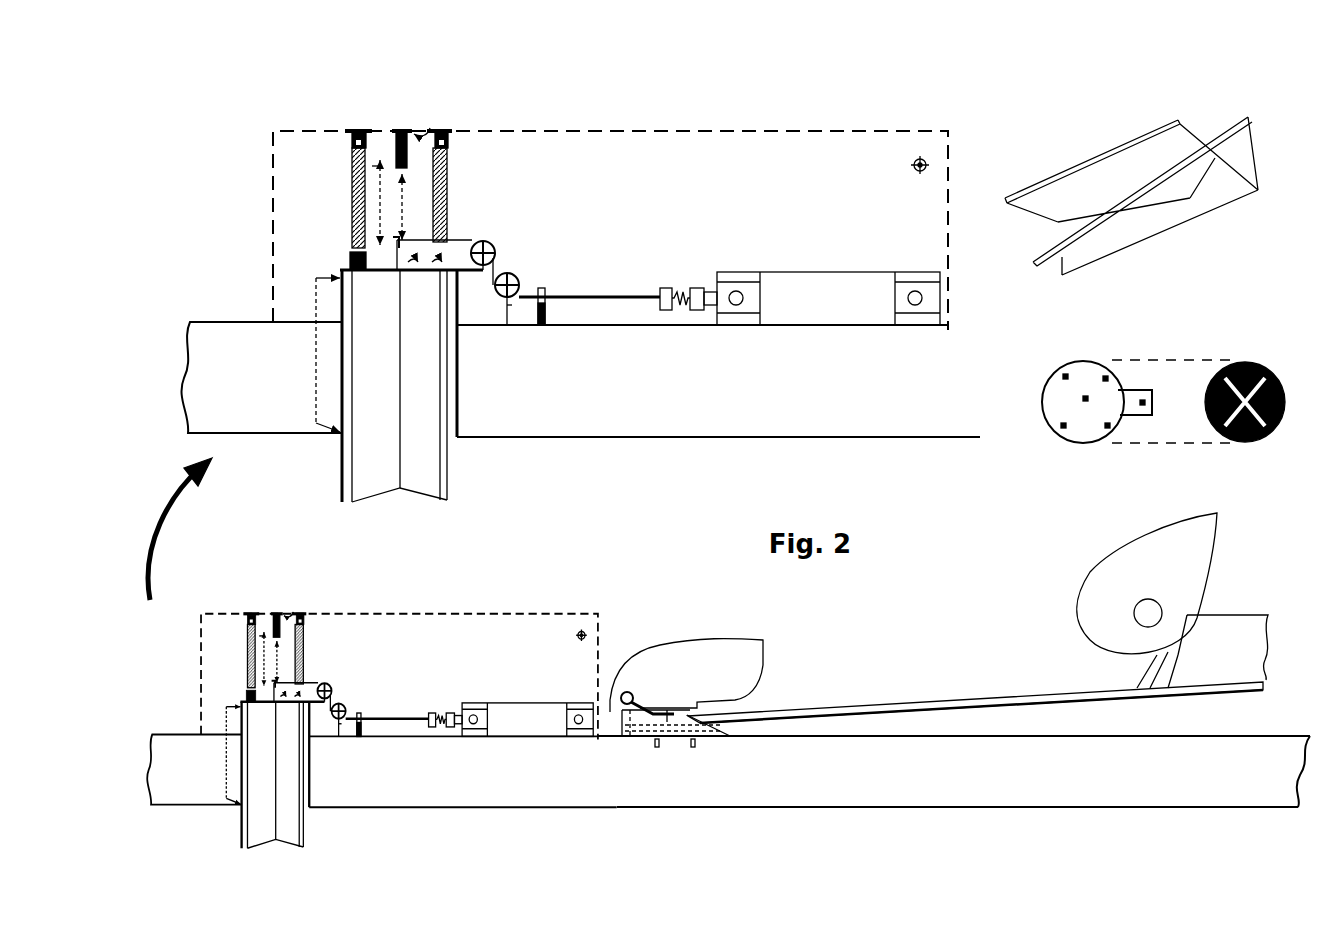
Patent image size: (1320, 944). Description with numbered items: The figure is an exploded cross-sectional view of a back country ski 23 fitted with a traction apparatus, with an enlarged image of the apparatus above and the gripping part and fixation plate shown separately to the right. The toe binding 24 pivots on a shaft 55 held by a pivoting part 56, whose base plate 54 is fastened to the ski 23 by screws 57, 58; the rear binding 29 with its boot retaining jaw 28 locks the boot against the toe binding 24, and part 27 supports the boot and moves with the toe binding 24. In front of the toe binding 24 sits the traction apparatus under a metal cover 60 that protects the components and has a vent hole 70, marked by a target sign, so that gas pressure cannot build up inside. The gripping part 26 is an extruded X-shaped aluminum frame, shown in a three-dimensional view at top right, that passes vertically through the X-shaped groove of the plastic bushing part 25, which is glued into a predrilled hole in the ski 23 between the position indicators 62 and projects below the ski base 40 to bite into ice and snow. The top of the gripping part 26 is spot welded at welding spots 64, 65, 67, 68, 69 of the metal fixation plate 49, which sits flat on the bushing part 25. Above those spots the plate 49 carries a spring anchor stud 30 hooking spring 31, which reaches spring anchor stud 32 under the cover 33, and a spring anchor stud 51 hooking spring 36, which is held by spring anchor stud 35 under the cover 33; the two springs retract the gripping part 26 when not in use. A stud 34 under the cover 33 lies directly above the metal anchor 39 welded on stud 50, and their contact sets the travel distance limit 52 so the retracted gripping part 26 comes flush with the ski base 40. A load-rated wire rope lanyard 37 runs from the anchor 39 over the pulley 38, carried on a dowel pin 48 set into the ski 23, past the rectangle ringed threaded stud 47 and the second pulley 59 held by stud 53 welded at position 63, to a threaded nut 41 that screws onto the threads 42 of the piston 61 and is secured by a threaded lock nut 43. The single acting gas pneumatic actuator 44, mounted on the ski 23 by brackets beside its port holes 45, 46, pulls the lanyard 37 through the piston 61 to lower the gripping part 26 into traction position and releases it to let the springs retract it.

The ski 23 is at (202, 344).
The toe binding 24 is at (696, 654).
The bushing part 25 is at (1250, 360).
The gripping part 26 is at (440, 490).
The boot support part 27 is at (1048, 697).
The boot retaining jaw 28 is at (1096, 600).
The rear binding 29 is at (1230, 630).
The spring anchor stud 30 is at (348, 268).
The spring 31 is at (349, 184).
The spring anchor stud 32 is at (348, 135).
The cover 33 is at (430, 128).
The stud 34 is at (394, 132).
The spring anchor stud 35 is at (456, 137).
The spring 36 is at (450, 186).
The load-rated wire rope lanyard 37 is at (470, 240).
The metal pulley 38 is at (518, 280).
The metal anchor 39 is at (406, 240).
The ski base 40 is at (554, 284).
The threaded nut 41 is at (664, 286).
The threads 42 is at (683, 286).
The threaded lock nut 43 is at (697, 286).
The single acting gas pneumatic actuator 44 is at (815, 272).
The port hole 45 is at (746, 297).
The port hole 46 is at (906, 298).
The rectangle ringed threaded stud 47 is at (548, 313).
The metal dowel pin 48 is at (513, 310).
The metal fixation plate 49 is at (426, 268).
The stud 50 is at (416, 266).
The spring anchor stud 51 is at (440, 272).
The travel distance limit 52 is at (380, 125).
The stud 53 is at (496, 291).
The base plate 54 is at (728, 737).
The shaft 55 is at (627, 692).
The pivoting part 56 is at (657, 710).
The screw 57 is at (660, 746).
The screw 58 is at (696, 746).
The second pulley 59 is at (493, 252).
The metal cover 60 is at (938, 130).
The piston 61 is at (712, 289).
The position indicators 62 is at (340, 356).
The position 63 is at (1144, 407).
The welding spot 64 is at (1108, 431).
The welding spot 65 is at (1065, 431).
The welding spot 67 is at (1062, 377).
The welding spot 68 is at (1106, 376).
The welding spot 69 is at (1085, 395).
The vent hole 70 is at (911, 168).